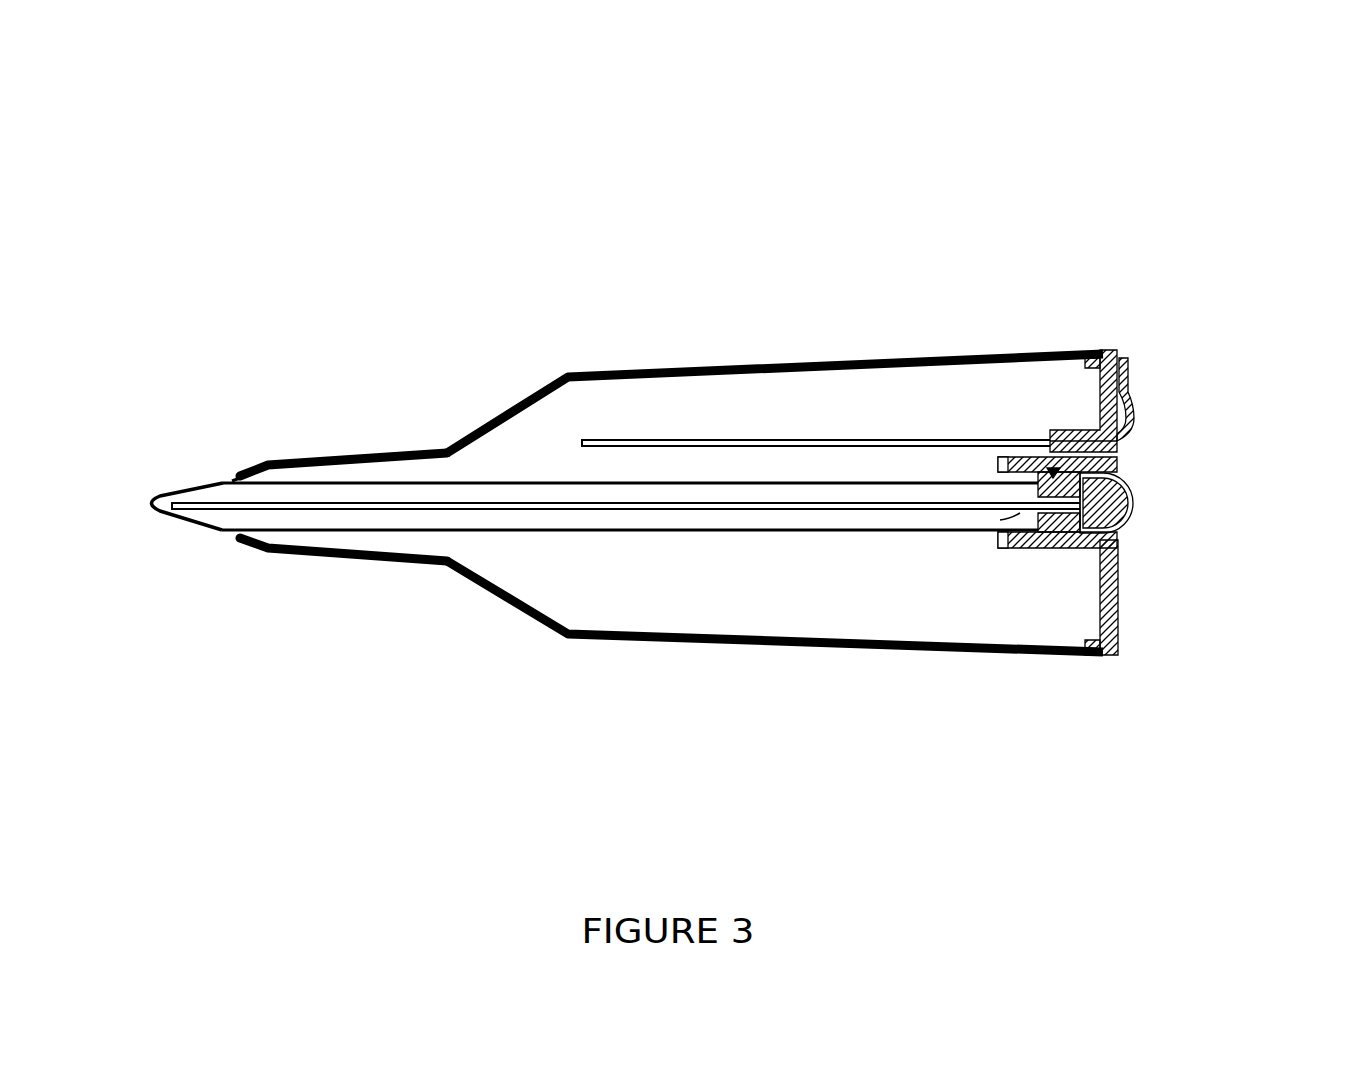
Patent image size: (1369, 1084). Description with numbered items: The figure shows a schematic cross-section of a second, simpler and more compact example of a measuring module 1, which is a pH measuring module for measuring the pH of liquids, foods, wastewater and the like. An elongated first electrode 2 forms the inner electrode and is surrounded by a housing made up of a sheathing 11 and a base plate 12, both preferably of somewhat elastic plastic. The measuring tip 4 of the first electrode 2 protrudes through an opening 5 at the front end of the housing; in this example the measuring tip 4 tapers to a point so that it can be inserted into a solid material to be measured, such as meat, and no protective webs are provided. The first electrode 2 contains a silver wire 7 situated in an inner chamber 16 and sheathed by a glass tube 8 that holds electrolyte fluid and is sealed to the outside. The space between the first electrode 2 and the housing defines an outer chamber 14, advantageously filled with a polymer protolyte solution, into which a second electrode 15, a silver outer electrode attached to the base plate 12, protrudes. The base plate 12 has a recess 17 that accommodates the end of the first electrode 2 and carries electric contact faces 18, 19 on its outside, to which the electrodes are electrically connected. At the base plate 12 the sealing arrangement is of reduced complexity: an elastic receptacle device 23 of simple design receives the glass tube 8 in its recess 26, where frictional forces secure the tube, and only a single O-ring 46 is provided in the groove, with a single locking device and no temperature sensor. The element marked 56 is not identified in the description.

The measuring module 1 is at (281, 190).
The first electrode 2 is at (546, 466).
The measuring tip 4 is at (170, 488).
The opening 5 is at (230, 466).
The silver wire 7 is at (367, 497).
The glass tube 8 is at (437, 482).
The sheathing 11 is at (832, 363).
The base plate 12 is at (1115, 603).
The chamber 14 is at (687, 397).
The second electrode 15 is at (747, 440).
The inner chamber 16 is at (420, 522).
The recess 17 is at (1154, 528).
The electric contact face 18 is at (1133, 505).
The electric contact face 19 is at (1140, 415).
The receptacle device 23 is at (1133, 487).
The recess 26 is at (1012, 521).
The O-ring 46 is at (1045, 532).
The lip 56 is at (1113, 412).